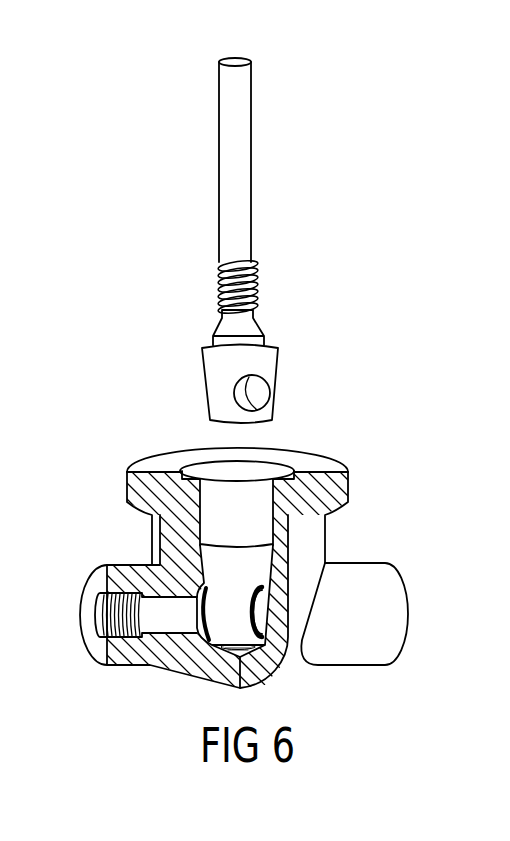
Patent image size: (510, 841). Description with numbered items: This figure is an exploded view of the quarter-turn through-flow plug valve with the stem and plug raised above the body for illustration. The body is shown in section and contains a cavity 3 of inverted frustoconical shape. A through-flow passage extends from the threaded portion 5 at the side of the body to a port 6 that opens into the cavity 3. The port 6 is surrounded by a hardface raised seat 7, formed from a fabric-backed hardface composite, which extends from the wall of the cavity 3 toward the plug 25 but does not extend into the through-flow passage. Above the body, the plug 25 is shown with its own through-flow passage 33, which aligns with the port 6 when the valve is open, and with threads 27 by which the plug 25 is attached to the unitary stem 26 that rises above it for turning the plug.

The unitary stem 26 is at (242, 176).
The threads 27 is at (218, 290).
The plug 25 is at (222, 385).
The through-flow passage 33 is at (257, 393).
The cavity 3 is at (245, 615).
The threaded portion 5 is at (105, 612).
The hardface raised seat 7 is at (210, 586).
The port 6 is at (263, 613).